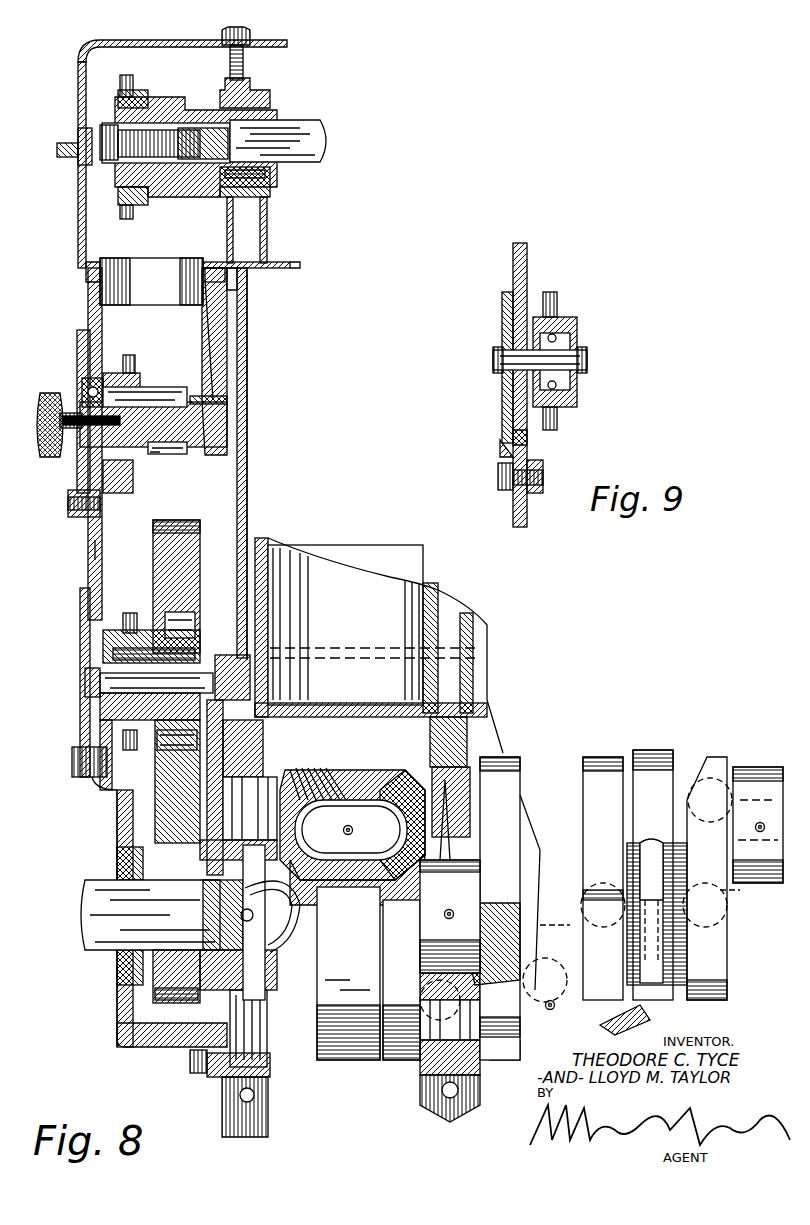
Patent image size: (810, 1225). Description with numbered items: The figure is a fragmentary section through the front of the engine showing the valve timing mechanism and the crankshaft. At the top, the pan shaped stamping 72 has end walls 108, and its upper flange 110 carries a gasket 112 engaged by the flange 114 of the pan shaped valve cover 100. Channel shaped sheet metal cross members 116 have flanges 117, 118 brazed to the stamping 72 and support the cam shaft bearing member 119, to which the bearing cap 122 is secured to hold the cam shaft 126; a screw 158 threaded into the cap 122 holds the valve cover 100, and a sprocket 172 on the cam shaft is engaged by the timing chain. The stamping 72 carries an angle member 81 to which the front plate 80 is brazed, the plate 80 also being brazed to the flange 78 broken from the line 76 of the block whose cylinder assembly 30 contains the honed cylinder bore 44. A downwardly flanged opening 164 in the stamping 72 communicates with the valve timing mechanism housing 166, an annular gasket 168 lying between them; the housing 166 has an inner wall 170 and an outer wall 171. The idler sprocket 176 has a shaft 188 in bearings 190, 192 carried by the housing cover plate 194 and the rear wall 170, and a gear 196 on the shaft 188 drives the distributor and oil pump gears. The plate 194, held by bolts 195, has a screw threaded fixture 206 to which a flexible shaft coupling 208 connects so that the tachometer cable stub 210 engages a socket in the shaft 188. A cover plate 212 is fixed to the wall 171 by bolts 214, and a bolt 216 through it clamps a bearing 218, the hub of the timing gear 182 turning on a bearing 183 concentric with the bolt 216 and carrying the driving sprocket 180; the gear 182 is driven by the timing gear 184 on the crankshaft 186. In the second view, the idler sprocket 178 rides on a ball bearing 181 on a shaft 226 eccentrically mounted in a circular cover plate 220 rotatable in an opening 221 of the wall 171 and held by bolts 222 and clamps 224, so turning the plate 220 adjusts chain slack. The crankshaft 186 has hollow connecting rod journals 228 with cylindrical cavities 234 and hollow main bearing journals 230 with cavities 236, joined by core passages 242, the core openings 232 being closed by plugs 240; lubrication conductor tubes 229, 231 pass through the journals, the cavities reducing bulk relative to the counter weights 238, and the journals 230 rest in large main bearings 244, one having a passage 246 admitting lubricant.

In FIG. 8, the pan shaped valve cover 100 is at (100, 40).
In FIG. 8, the end walls 108 is at (78, 232).
In FIG. 8, the screw 158 is at (228, 28).
In FIG. 8, the bearing cap 122 is at (258, 92).
In FIG. 8, the sprocket 172 is at (136, 80).
In FIG. 8, the flange 110 is at (96, 160).
In FIG. 8, the gasket 112 is at (82, 146).
In FIG. 8, the flange 114 is at (62, 150).
In FIG. 8, the cam shaft 126 is at (312, 122).
In FIG. 8, the cam shaft bearing member 119 is at (272, 190).
In FIG. 8, the channel shaped sheet metal cross member 116 is at (268, 218).
In FIG. 8, the flange 118 is at (276, 262).
In FIG. 8, the stamping 72 is at (300, 265).
In FIG. 8, the flange 117 is at (216, 262).
In FIG. 8, the downwardly flanged opening 164 is at (150, 248).
In FIG. 8, the annular gasket 168 is at (88, 272).
In FIG. 8, the valve timing mechanism housing 166 is at (90, 312).
In FIG. 8, the inner wall 170 is at (228, 358).
In FIG. 8, the angle member 81 is at (250, 278).
In FIG. 8, the front plate 80 is at (248, 478).
In FIG. 8, the cylinder assembly 30 is at (256, 540).
In FIG. 8, the idler sprocket 176 is at (170, 340).
In FIG. 8, the bearing 190 is at (80, 376).
In FIG. 8, the shaft 188 is at (222, 424).
In FIG. 8, the bearing 192 is at (226, 402).
In FIG. 8, the screw threaded fixture 206 is at (88, 392).
In FIG. 8, the stub 210 is at (136, 396).
In FIG. 8, the flexible shaft coupling 208 is at (42, 455).
In FIG. 8, the gear 196 is at (152, 454).
In FIG. 8, the housing cover plate 194 is at (78, 486).
In FIG. 8, the bolt 195 is at (70, 503).
In FIG. 8, the timing gear 182 is at (185, 513).
In FIG. 8, the outer wall 171 is at (96, 548).
In FIG. 9, the outer wall 171 is at (527, 255).
In FIG. 8, the cover plate 212 is at (82, 604).
In FIG. 8, the driving sprocket 180 is at (135, 597).
In FIG. 8, the bearing 183 is at (112, 652).
In FIG. 8, the bolt 216 is at (88, 683).
In FIG. 8, the bearing 218 is at (112, 700).
In FIG. 8, the line 76 is at (250, 668).
In FIG. 8, the flange 78 is at (252, 673).
In FIG. 8, the bolt 214 is at (74, 758).
In FIG. 8, the main bearing 244 is at (228, 1020).
In FIG. 8, the timing gear 184 is at (142, 868).
In FIG. 8, the crankshaft 186 is at (86, 904).
In FIG. 8, the passage 246 is at (236, 912).
In FIG. 8, the cylinder bore 44 is at (331, 572).
In FIG. 8, the opening 232 is at (318, 785).
In FIG. 8, the screw threaded plug 240 is at (286, 790).
In FIG. 8, the cylindrical cavity 234 is at (402, 786).
In FIG. 8, the hollow journal 228 is at (356, 768).
In FIG. 8, the lubrication conductor tube 229 is at (352, 832).
In FIG. 8, the core passage 242 is at (305, 890).
In FIG. 8, the counter weight 238 is at (336, 1062).
In FIG. 8, the hollow journal 230 is at (290, 918).
In FIG. 8, the cavity 236 is at (275, 954).
In FIG. 8, the lubrication conductor tube 231 is at (458, 898).
In FIG. 9, the cover plate 220 is at (505, 318).
In FIG. 9, the ball bearing 181 is at (560, 335).
In FIG. 9, the idler sprocket 178 is at (560, 293).
In FIG. 9, the shaft 226 is at (495, 360).
In FIG. 9, the circular opening 221 is at (527, 436).
In FIG. 9, the clamp 224 is at (501, 450).
In FIG. 9, the bolt 222 is at (500, 475).